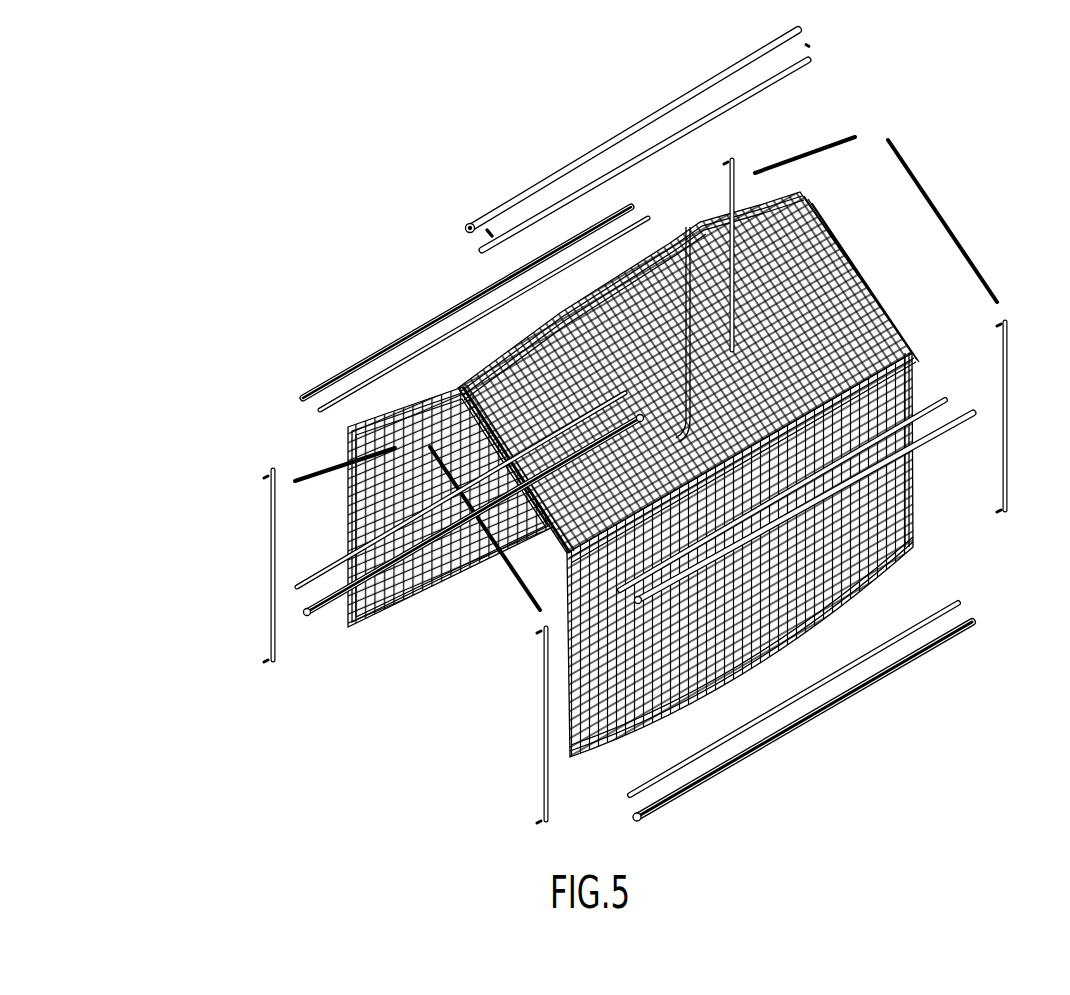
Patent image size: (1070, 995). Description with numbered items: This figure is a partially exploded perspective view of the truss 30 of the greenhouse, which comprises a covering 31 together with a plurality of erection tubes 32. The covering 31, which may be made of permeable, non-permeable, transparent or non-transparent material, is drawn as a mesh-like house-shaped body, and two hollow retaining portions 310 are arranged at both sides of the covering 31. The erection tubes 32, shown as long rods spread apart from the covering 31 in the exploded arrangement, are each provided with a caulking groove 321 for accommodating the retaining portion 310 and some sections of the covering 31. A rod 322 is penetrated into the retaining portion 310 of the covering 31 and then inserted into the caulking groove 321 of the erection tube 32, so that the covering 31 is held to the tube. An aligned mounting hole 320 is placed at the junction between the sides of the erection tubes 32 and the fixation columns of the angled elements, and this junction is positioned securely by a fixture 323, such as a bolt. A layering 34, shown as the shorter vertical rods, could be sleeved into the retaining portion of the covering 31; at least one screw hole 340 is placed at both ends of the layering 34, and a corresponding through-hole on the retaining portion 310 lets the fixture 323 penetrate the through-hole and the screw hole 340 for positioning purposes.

The truss 30 is at (418, 100).
The covering 31 is at (497, 553).
The erection tube 32 is at (585, 157).
The retaining portion 310 is at (785, 193).
The mounting hole 320 is at (468, 228).
The caulking groove 321 is at (468, 230).
The rod 322 is at (693, 125).
The fixture 323 is at (480, 250).
The layering 34 is at (270, 558).
The screw hole 340 is at (272, 472).